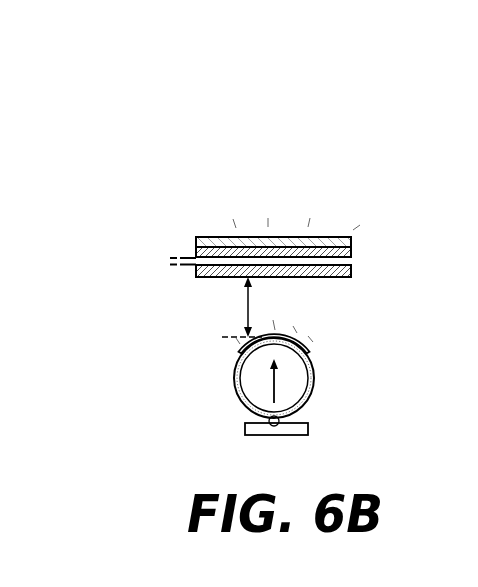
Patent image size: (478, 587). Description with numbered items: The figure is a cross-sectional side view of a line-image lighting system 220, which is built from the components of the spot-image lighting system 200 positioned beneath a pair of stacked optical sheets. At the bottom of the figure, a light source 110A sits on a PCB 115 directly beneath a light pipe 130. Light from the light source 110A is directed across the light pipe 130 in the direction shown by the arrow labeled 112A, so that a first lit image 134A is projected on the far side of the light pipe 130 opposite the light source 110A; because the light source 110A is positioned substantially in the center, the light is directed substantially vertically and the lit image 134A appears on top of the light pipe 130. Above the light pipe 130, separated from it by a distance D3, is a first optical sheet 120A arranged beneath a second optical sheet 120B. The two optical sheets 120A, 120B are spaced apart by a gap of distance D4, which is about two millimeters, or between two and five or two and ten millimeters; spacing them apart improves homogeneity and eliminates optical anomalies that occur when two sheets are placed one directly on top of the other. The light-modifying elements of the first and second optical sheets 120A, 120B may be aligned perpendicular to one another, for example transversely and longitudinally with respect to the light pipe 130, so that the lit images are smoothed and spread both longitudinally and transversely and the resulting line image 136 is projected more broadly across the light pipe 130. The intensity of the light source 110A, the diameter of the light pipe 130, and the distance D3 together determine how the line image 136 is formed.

The line-image lighting system 220 is at (306, 182).
The line image 136 is at (203, 238).
The second optical sheet 120B is at (352, 253).
The first optical sheet 120A is at (352, 271).
The distance D4 is at (160, 266).
The distance D3 is at (240, 307).
The spot-image lighting system 200 is at (242, 373).
The light pipe 130 is at (314, 369).
The first lit image 134A is at (278, 336).
The arrow 112A is at (278, 381).
The light source 110A is at (266, 417).
The PCB 115 is at (308, 433).